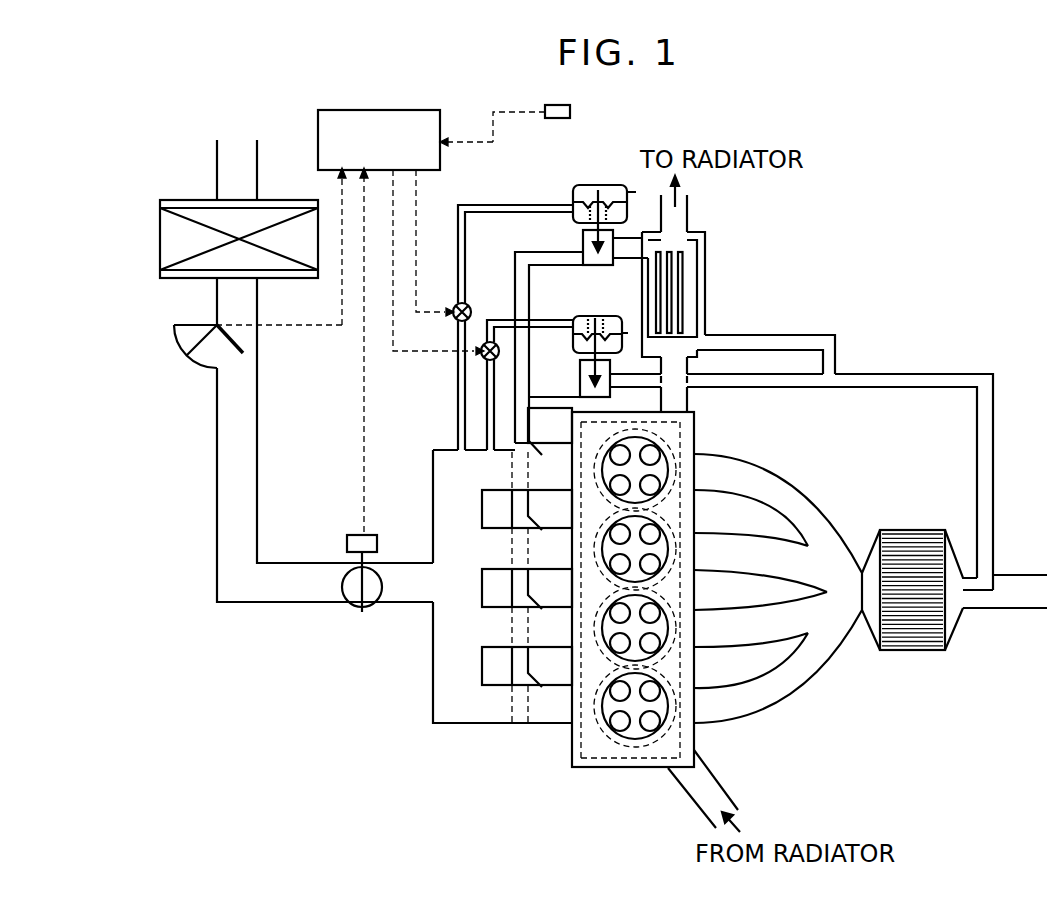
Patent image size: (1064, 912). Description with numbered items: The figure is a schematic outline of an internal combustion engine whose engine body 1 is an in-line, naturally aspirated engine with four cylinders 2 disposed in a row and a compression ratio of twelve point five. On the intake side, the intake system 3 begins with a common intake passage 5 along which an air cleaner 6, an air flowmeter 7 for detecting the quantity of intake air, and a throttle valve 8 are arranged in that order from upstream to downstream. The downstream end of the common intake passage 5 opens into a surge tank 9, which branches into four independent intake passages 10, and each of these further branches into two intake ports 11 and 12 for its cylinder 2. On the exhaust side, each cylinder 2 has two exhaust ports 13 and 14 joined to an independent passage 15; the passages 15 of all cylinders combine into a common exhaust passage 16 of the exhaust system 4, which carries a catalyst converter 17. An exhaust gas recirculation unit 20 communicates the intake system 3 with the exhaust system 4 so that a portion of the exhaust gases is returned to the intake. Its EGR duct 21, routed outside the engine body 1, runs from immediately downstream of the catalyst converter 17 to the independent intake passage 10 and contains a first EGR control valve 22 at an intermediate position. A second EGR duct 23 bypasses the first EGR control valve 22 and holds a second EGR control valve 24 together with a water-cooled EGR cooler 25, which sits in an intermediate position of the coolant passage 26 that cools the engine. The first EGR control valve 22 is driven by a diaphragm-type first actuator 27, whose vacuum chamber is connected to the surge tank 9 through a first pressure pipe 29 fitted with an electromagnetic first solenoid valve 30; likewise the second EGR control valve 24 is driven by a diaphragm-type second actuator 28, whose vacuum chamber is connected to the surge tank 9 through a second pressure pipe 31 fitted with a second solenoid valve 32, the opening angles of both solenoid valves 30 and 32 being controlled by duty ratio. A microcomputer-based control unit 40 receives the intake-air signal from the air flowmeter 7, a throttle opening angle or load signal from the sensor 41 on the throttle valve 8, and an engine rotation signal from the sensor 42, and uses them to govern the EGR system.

The engine body 1 is at (590, 767).
The cylinder 2 is at (688, 424).
The intake system 3 is at (390, 632).
The exhaust system 4 is at (822, 698).
The common intake passage 5 is at (247, 457).
The air cleaner 6 is at (160, 229).
The air flowmeter 7 is at (177, 342).
The throttle valve 8 is at (350, 594).
The surge tank 9 is at (464, 600).
The independent intake passage 10 is at (502, 486).
The intake port 11 is at (610, 446).
The intake port 12 is at (590, 472).
The exhaust port 13 is at (660, 457).
The exhaust port 14 is at (660, 487).
The independent intake passage 15 is at (818, 517).
The common exhaust passage 16 is at (1046, 604).
The catalyst converter 17 is at (930, 650).
The exhaust gas recirculation unit 20 is at (844, 320).
The EGR duct 21 is at (812, 380).
The first EGR control valve 22 is at (580, 378).
The second EGR duct 23 is at (788, 336).
The second EGR control valve 24 is at (583, 248).
The EGR cooler 25 is at (707, 268).
The coolant passage 26 is at (692, 212).
The first actuator 27 is at (596, 317).
The second actuator 28 is at (600, 183).
The first pressure pipe 29 is at (551, 320).
The first solenoid valve 30 is at (487, 340).
The second pressure pipe 31 is at (493, 205).
The second solenoid valve 32 is at (460, 303).
The control unit 40 is at (318, 116).
The sensor 41 is at (347, 538).
The sensor 42 is at (572, 112).